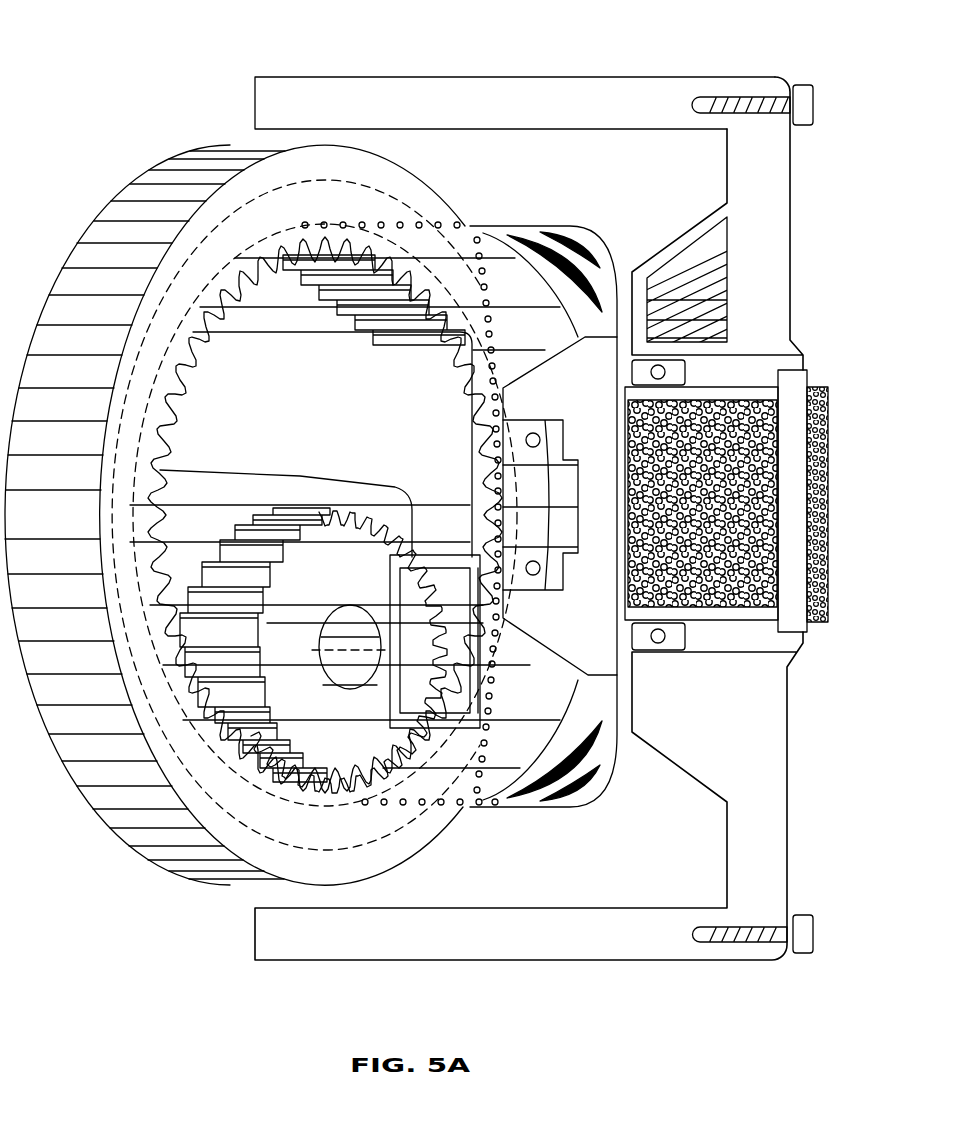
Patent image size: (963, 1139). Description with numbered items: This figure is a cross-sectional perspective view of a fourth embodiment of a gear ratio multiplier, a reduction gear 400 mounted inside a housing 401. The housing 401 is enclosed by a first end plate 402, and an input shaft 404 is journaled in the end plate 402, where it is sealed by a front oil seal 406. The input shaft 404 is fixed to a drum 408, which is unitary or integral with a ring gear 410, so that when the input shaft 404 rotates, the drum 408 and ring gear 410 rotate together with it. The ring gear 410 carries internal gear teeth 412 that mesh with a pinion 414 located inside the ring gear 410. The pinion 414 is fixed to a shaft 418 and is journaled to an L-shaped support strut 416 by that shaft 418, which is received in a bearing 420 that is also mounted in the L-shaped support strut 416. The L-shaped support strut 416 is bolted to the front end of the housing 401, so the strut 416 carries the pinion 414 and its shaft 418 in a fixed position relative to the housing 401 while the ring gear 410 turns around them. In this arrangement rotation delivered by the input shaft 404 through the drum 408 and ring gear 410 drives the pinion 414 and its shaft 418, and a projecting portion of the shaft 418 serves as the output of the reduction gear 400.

The reduction gear 400 is at (690, 73).
The housing 401 is at (495, 73).
The first end plate 402 is at (727, 180).
The input shaft 404 is at (816, 385).
The front oil seal 406 is at (816, 628).
The drum 408 is at (610, 240).
The ring gear 410 is at (416, 196).
The internal gear teeth 412 is at (248, 272).
The pinion 414 is at (307, 568).
The L-shaped support strut 416 is at (372, 482).
The shaft 418 is at (352, 612).
The bearing 420 is at (390, 590).